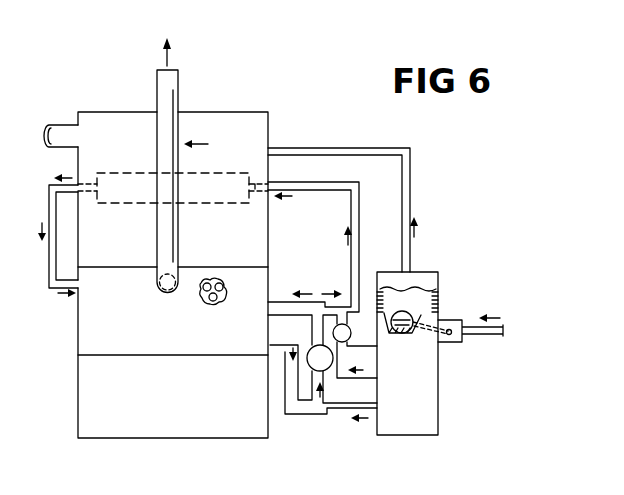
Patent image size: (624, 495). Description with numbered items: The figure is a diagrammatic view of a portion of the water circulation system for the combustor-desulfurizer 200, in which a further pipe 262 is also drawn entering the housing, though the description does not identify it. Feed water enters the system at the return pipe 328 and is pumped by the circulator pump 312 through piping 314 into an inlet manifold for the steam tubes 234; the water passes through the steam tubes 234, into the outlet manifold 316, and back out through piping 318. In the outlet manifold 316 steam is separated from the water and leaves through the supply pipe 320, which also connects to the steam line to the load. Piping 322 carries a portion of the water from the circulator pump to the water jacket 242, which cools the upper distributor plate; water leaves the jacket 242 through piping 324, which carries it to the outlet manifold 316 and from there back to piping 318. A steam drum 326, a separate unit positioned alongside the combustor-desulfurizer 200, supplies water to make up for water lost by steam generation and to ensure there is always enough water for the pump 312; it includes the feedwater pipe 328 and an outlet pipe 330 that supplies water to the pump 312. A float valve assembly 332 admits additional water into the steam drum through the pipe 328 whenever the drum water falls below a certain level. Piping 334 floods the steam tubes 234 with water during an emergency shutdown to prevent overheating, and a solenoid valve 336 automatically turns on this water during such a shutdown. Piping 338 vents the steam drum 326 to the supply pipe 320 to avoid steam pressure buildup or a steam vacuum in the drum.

The combustor-desulfurizer 200 is at (282, 97).
The inlet conduit 262 is at (60, 122).
The supply pipe 320 is at (157, 163).
The water jacket 242 is at (130, 172).
The piping 324 is at (47, 195).
The outlet manifold 316 is at (125, 277).
The steam tubes 234 is at (220, 278).
The piping 314 is at (279, 300).
The solenoid valve 336 is at (351, 304).
The piping 322 is at (362, 200).
The piping 338 is at (412, 192).
The steam drum 326 is at (440, 280).
The return pipe 328 is at (474, 322).
The float valve assembly 332 is at (416, 326).
The piping 334 is at (376, 372).
The circulator pump 312 is at (330, 367).
The piping 318 is at (285, 414).
The outlet pipe 330 is at (373, 410).